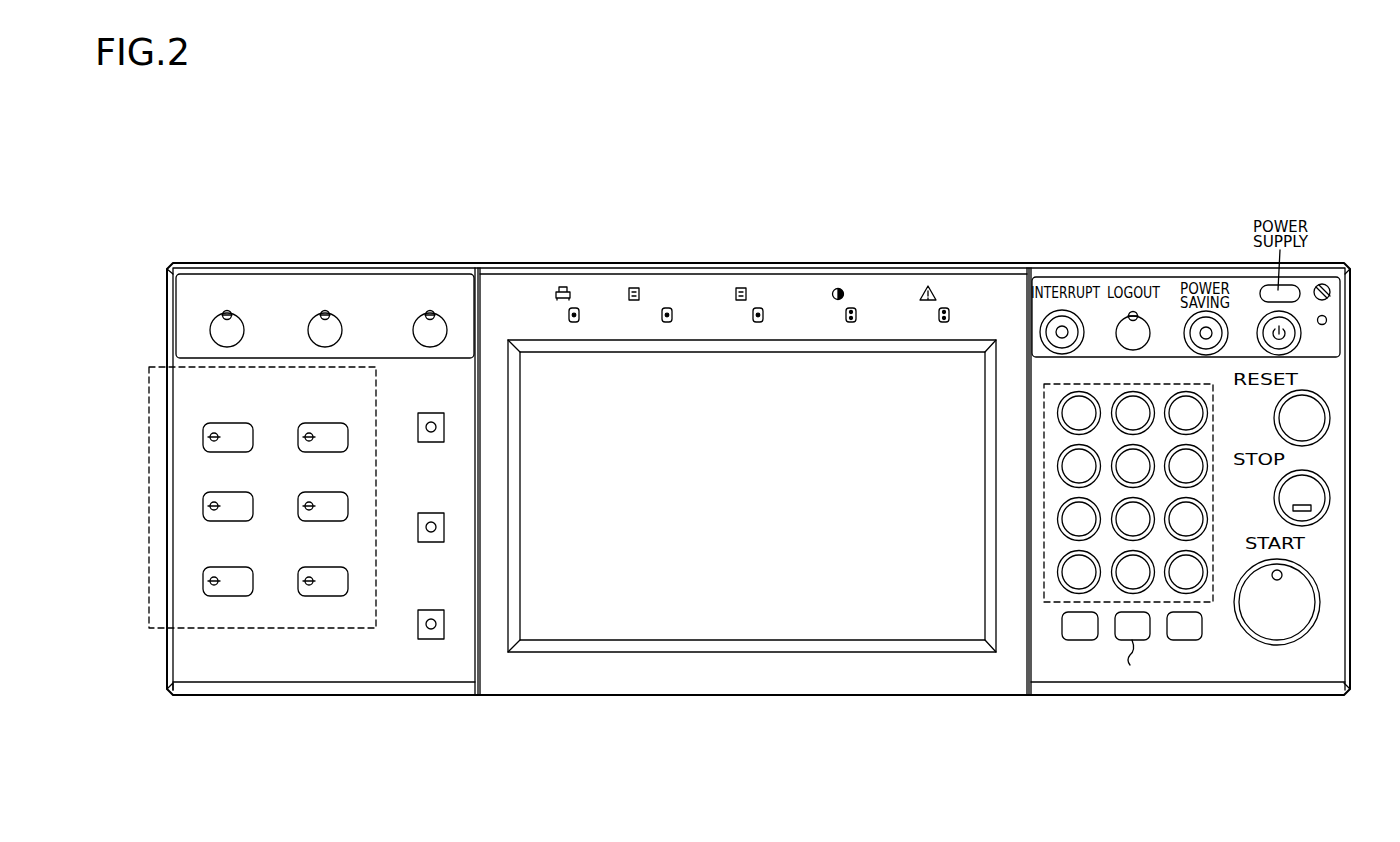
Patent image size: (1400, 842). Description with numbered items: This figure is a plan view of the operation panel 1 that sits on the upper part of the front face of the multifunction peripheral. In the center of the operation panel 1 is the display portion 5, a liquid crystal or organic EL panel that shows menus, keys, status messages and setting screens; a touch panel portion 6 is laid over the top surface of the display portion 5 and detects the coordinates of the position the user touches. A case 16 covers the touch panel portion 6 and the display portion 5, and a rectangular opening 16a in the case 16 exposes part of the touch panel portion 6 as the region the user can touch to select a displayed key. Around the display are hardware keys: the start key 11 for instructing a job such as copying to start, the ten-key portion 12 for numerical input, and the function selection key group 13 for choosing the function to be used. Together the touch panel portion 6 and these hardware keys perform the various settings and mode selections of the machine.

The operation panel 1 is at (174, 258).
The display portion 5 is at (726, 451).
The touch panel portion 6 is at (717, 618).
The start key 11 is at (1300, 603).
The ten-key portion 12 is at (1055, 603).
The function selection key group 13 is at (264, 628).
The case 16 is at (518, 685).
The opening 16a is at (551, 392).